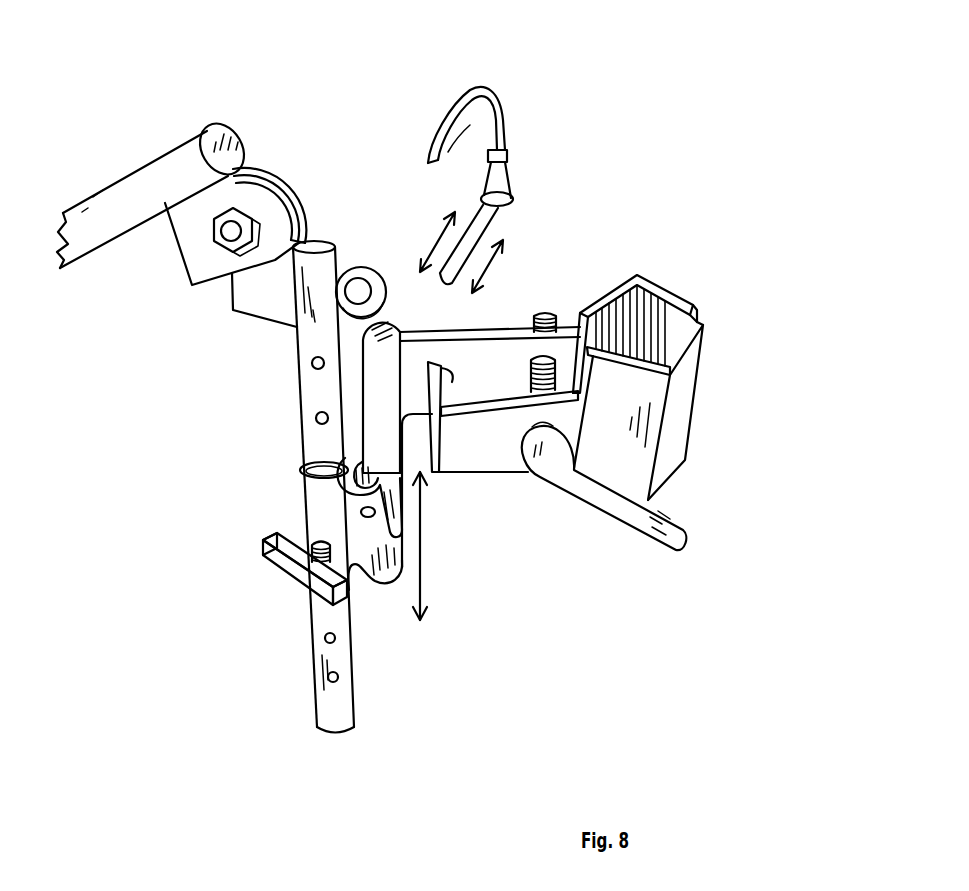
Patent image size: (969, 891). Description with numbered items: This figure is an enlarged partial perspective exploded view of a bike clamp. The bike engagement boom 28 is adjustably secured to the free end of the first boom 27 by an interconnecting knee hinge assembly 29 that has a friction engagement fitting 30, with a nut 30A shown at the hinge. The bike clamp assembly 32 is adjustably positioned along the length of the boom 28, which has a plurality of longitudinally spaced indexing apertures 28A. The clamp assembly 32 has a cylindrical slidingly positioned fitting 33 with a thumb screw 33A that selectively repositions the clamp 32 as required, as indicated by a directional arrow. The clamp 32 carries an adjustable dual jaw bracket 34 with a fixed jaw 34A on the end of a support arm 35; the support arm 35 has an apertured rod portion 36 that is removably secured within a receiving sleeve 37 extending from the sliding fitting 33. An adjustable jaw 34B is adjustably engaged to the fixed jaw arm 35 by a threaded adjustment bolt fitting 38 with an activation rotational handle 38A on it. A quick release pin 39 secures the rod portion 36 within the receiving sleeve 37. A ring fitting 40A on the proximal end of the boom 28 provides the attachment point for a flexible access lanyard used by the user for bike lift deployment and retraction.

The first boom 27 is at (150, 173).
The bike engagement boom 28 is at (348, 683).
The indexing apertures 28A is at (327, 637).
The knee hinge assembly 29 is at (285, 178).
The friction engagement fitting 30 is at (290, 204).
The nut 30A is at (242, 212).
The bike clamp assembly 32 is at (608, 267).
The cylindrical slidingly positioned fitting 33 is at (303, 515).
The thumb screw 33A is at (293, 573).
The adjustable dual jaw bracket 34 is at (678, 292).
The fixed jaw 34A is at (695, 303).
The adjustable jaw 34B is at (677, 420).
The support arm 35 is at (500, 358).
The apertured rod portion 36 is at (375, 388).
The receiving sleeve 37 is at (400, 580).
The threaded adjustment bolt fitting 38 is at (530, 380).
The activation rotational handle 38A is at (642, 526).
The quick release pin 39 is at (512, 233).
The ring fitting 40A is at (363, 270).